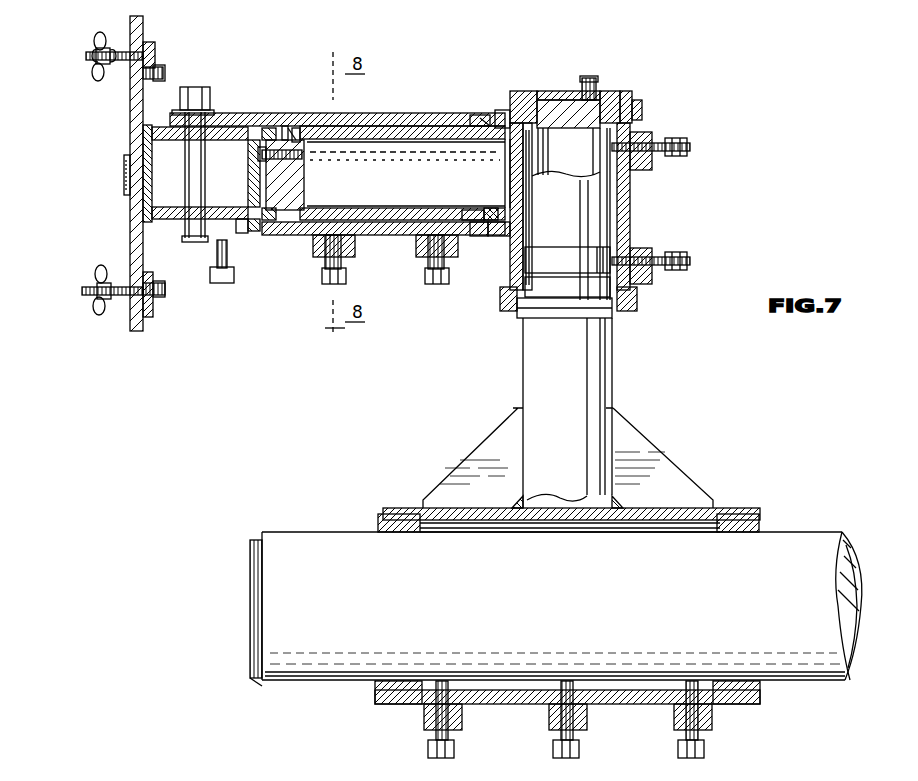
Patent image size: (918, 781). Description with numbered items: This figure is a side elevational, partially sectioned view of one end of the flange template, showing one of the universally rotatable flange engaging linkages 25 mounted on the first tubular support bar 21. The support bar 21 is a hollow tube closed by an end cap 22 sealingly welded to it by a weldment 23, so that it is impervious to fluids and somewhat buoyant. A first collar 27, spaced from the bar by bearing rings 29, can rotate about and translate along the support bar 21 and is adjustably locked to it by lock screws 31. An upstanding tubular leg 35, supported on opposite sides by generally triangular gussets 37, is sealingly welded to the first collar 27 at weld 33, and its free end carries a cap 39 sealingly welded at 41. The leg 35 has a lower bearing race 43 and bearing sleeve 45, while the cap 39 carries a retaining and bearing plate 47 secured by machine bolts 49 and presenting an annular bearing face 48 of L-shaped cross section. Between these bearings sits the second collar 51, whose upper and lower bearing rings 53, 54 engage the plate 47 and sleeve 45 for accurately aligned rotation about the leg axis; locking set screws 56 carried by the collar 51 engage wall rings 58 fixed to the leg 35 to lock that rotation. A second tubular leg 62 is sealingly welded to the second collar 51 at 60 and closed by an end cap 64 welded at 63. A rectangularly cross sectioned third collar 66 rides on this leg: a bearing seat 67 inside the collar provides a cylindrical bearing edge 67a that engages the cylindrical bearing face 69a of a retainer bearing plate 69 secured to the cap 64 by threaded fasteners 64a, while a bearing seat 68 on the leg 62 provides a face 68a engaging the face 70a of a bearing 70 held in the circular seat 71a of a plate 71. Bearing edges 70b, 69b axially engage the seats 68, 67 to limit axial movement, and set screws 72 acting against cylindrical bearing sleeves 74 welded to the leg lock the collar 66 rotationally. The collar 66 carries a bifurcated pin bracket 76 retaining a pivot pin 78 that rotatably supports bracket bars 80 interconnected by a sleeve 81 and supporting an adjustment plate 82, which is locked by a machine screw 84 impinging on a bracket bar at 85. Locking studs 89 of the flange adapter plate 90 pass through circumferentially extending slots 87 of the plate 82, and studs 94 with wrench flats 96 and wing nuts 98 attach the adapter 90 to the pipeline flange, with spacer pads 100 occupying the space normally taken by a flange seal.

The first tubular support bar 21 is at (345, 690).
The end cap 22 is at (250, 652).
The weldment 23 is at (250, 590).
The flange engaging linkage 25 is at (650, 358).
The first collar 27 is at (488, 704).
The bearing ring 29 is at (378, 522).
The lock screw 31 is at (454, 744).
The weld 33 is at (622, 502).
The upstanding tubular leg 35 is at (612, 378).
The gusset 37 is at (466, 460).
The cap 39 is at (566, 100).
The weld 41 is at (598, 140).
The lower bearing race 43 is at (620, 318).
The bearing sleeve 45 is at (504, 311).
The retaining and bearing plate 47 is at (610, 91).
The annular bearing face 48 is at (528, 91).
The machine bolt 49 is at (600, 64).
The second collar 51 is at (630, 196).
The upper bearing ring 53 is at (642, 100).
The lower bearing ring 54 is at (637, 296).
The locking set screw 56 is at (690, 140).
The wall ring 58 is at (572, 260).
The weld 60 is at (504, 110).
The second tubular leg 62 is at (400, 126).
The weld 63 is at (298, 126).
The end cap 64 is at (304, 182).
The threaded fastener 64a is at (302, 155).
The third collar 66 is at (244, 234).
The bearing seat 67 is at (285, 126).
The cylindrical bearing edge 67a is at (290, 126).
The bearing seat 68 is at (504, 236).
The cylindrical bearing face 68a is at (494, 220).
The retainer bearing plate 69 is at (268, 126).
The cylindrical bearing face 69a is at (270, 222).
The bearing edge 69b is at (254, 232).
The bearing 70 is at (474, 115).
The cylindrical bearing face 70a is at (470, 222).
The bearing edge 70b is at (532, 197).
The plate 71 is at (478, 236).
The circular seat 71a is at (484, 116).
The set screw 72 is at (346, 275).
The cylindrical bearing sleeve 74 is at (330, 235).
The bifurcated pin bracket 76 is at (240, 113).
The pivot pin 78 is at (192, 244).
The bracket bar 80 is at (214, 150).
The sleeve 81 is at (172, 186).
The adjustment plate 82 is at (155, 50).
The machine screw 84 is at (216, 280).
The impingement point 85 is at (246, 180).
The circumferentially extending slot 87 is at (150, 296).
The locking stud 89 is at (165, 72).
The flange adapter plate 90 is at (143, 28).
The stud 94 is at (112, 50).
The wrench flats 96 is at (92, 56).
The wing nut 98 is at (96, 68).
The spacer pad 100 is at (124, 176).